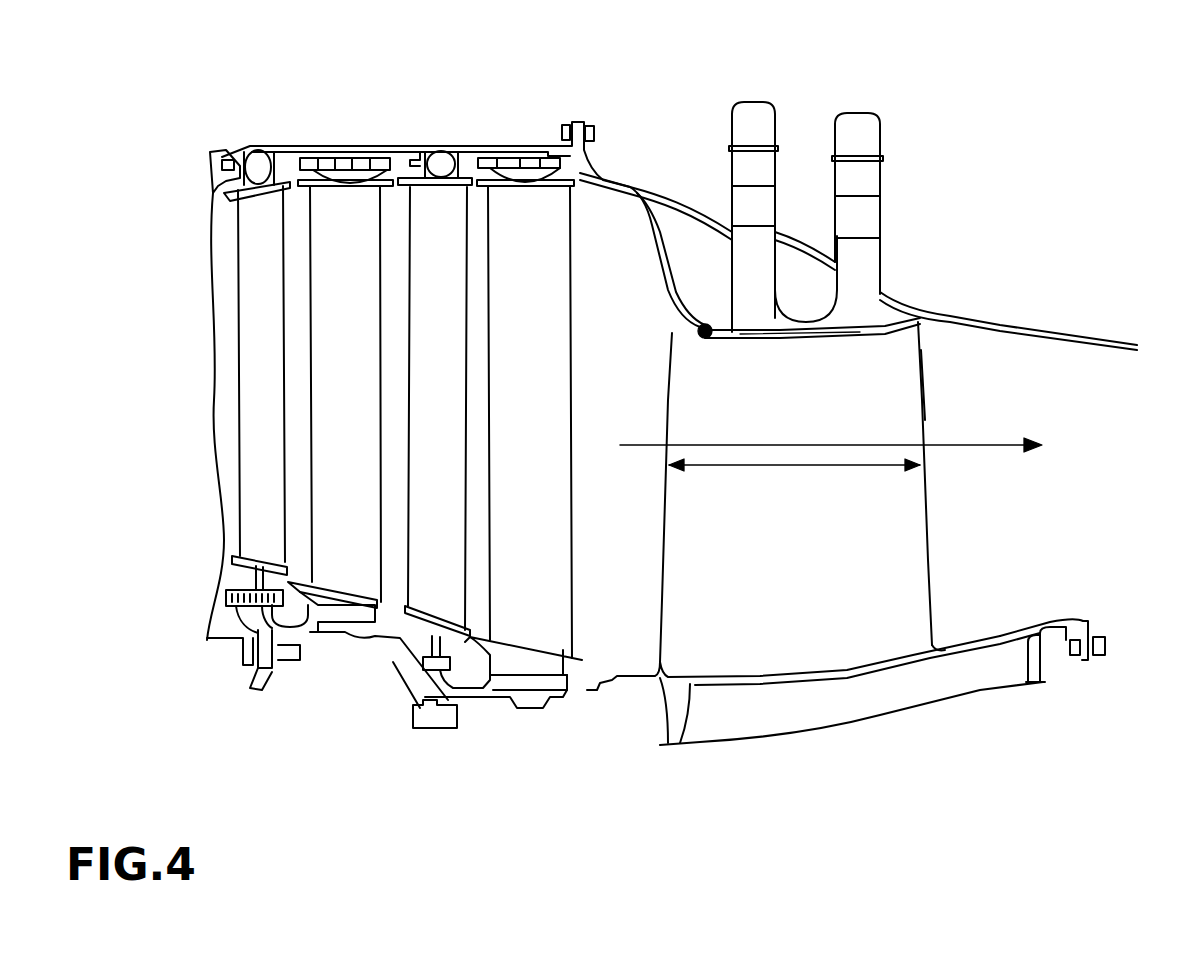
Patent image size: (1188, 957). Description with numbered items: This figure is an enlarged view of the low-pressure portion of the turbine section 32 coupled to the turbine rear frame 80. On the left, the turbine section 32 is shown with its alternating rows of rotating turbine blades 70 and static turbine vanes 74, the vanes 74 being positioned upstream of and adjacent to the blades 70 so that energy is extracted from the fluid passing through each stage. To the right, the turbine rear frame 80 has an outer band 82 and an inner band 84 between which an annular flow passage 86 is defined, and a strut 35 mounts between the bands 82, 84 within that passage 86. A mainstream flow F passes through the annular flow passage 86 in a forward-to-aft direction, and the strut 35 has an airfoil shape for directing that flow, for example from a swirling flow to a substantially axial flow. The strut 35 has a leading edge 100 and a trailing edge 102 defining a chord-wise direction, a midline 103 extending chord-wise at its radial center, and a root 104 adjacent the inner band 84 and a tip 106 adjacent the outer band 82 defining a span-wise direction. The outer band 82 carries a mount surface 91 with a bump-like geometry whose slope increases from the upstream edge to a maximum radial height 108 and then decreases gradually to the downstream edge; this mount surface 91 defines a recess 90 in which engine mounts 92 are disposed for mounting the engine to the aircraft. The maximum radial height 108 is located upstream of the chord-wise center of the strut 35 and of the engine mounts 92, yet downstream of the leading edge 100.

The turbine section 32 is at (212, 100).
The turbine blades 70 is at (335, 406).
The static turbine vanes 74 is at (250, 406).
The turbine rear frame 80 is at (1107, 770).
The outer band 82 is at (947, 316).
The inner band 84 is at (943, 658).
The annular flow passage 86 is at (998, 614).
The mount recess 90 is at (792, 292).
The mount surface 91 is at (847, 335).
The engine mounts 92 is at (752, 102).
The leading edge 100 is at (667, 555).
The trailing edge 102 is at (930, 548).
The midline 103 is at (868, 470).
The root 104 is at (853, 695).
The tip 106 is at (732, 340).
The maximum radial height 108 is at (703, 320).
The struts 35 is at (928, 397).